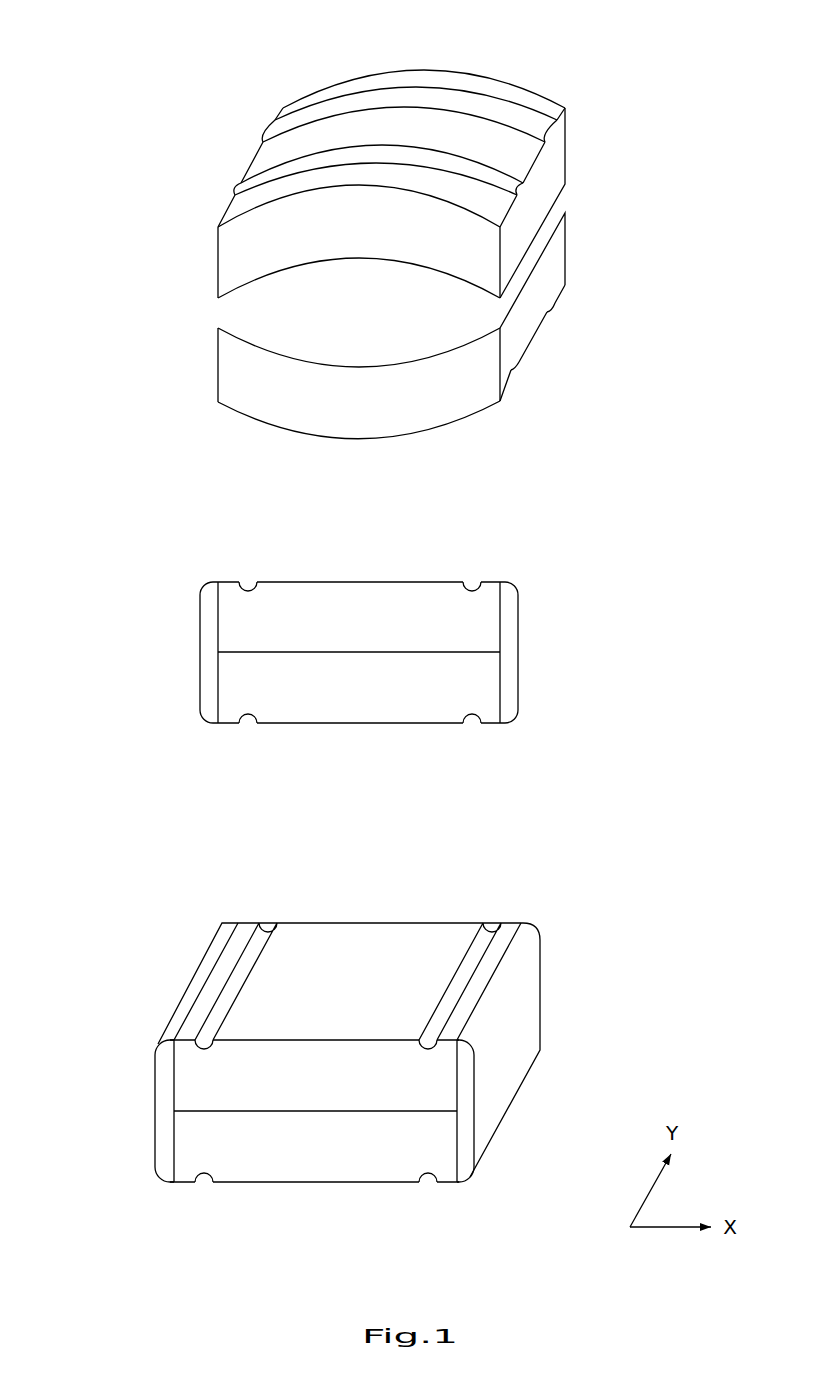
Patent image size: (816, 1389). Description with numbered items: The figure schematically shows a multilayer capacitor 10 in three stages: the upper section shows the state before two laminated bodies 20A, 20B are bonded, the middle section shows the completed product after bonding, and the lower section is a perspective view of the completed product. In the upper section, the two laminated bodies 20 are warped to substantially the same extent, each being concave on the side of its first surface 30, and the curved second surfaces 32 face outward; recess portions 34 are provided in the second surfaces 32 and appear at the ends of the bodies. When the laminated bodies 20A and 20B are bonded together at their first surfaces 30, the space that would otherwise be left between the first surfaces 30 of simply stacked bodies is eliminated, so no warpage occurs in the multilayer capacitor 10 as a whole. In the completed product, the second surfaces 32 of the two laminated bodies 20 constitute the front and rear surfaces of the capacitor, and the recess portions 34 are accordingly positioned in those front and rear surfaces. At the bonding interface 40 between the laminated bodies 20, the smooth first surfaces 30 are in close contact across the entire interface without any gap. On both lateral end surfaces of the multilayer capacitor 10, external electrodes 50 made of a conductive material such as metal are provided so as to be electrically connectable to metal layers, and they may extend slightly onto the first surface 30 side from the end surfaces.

The multilayer capacitor 10 is at (364, 625).
The laminated body 20 is at (364, 625).
The laminated body 20A is at (243, 249).
The laminated body 20B is at (243, 377).
The first surface 30 is at (277, 276).
The second surface 32 is at (393, 126).
The recess portion 34 is at (517, 363).
The bonding interface 40 is at (480, 652).
The external electrode 50 is at (212, 707).